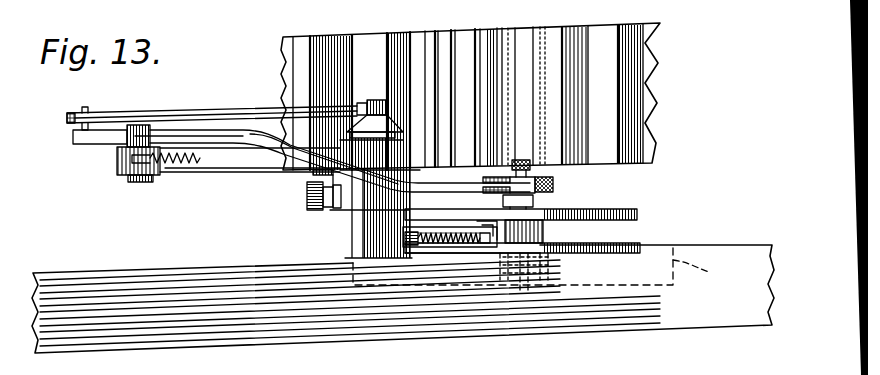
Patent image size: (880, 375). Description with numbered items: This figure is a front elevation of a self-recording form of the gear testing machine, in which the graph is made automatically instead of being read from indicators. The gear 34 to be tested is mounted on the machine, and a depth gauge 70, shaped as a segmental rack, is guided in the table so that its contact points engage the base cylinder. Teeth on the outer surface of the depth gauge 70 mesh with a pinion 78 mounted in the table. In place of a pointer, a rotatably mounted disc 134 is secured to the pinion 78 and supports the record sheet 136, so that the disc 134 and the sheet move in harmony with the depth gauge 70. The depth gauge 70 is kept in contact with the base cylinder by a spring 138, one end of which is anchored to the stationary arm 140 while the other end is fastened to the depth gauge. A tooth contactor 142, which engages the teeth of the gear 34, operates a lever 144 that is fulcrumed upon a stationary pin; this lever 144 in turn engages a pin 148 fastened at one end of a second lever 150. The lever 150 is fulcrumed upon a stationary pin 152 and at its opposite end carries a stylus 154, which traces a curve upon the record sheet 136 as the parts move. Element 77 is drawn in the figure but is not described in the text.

The gear 34 is at (633, 87).
The tooth contactor 142 is at (358, 99).
The lever 144 is at (155, 100).
The pin 148 is at (88, 103).
The lever 150 is at (212, 130).
The stationary pin 152 is at (140, 182).
The stylus 154 is at (507, 197).
The disc 134 is at (637, 212).
The record sheet 136 is at (620, 206).
The stationary arm 140 is at (403, 228).
The spring 138 is at (457, 248).
The rod 77 is at (487, 245).
The pinion 78 is at (550, 277).
The depth gauge 70 is at (403, 299).